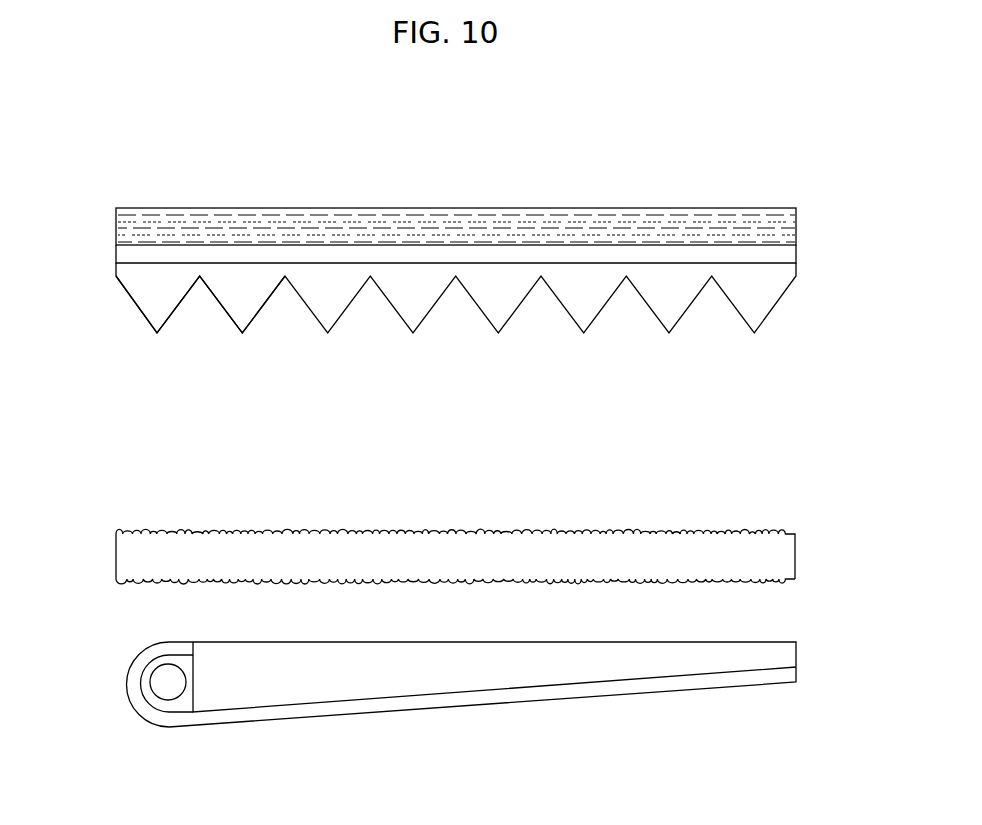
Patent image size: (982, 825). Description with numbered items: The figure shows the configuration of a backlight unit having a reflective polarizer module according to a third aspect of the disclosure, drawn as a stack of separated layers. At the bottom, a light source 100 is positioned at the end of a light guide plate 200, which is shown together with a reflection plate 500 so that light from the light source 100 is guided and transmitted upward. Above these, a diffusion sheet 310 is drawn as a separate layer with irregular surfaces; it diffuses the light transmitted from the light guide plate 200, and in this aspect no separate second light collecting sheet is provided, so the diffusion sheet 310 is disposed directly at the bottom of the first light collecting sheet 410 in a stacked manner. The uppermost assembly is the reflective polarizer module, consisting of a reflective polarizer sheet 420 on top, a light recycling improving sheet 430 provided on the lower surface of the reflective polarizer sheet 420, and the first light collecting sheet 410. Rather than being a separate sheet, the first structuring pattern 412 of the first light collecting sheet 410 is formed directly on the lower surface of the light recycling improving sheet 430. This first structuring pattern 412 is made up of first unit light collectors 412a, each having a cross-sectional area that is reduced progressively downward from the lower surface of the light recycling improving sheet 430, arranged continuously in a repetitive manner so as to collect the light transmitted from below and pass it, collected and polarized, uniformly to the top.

The light source 100 is at (163, 683).
The light guide plate 200 is at (273, 682).
The diffusion sheet 310 is at (125, 548).
The first light collecting sheet 410 is at (450, 338).
The first structuring pattern 412 is at (762, 285).
The first unit light collector 412a is at (158, 302).
The reflective polarizer sheet 420 is at (783, 227).
The light recycling improving sheet 430 is at (783, 256).
The reflection plate 500 is at (525, 692).